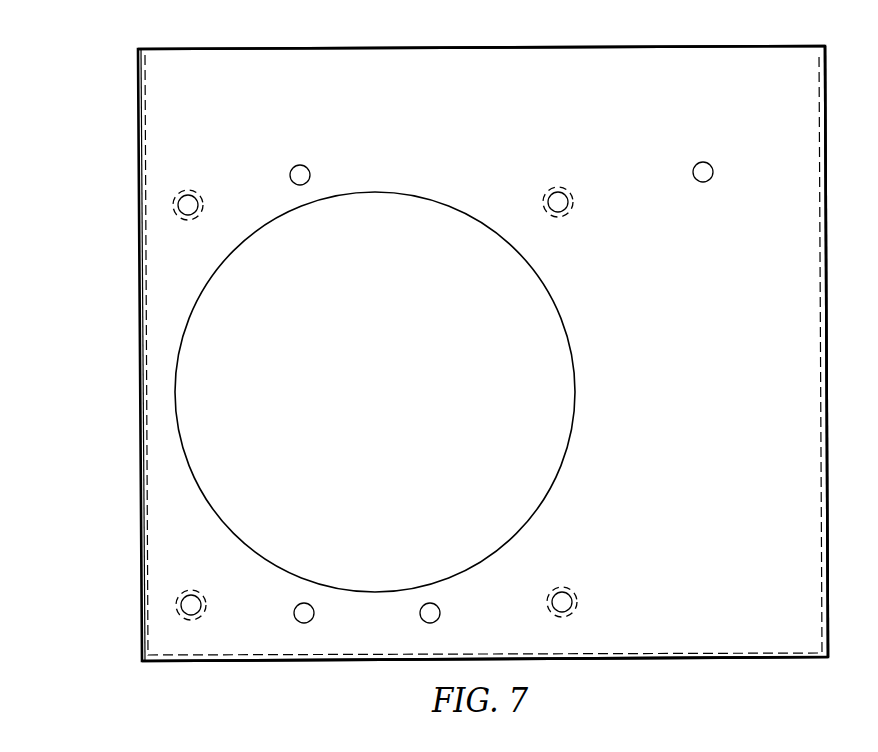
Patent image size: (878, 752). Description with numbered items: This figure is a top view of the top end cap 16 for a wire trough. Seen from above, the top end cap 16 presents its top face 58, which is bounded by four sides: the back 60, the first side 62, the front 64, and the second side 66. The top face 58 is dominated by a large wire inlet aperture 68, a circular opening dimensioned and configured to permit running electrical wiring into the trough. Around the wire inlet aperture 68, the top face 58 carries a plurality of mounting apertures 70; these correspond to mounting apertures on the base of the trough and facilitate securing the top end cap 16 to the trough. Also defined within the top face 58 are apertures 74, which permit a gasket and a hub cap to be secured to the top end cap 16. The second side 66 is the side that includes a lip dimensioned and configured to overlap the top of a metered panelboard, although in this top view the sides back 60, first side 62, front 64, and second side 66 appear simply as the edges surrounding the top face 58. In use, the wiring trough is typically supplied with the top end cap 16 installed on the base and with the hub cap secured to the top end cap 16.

The top end cap 16 is at (122, 455).
The top face 58 is at (805, 138).
The back 60 is at (140, 290).
The first side 62 is at (720, 659).
The front 64 is at (828, 302).
The second side 66 is at (752, 48).
The wire inlet aperture 68 is at (389, 394).
The mounting apertures 70 is at (296, 165).
The apertures 74 is at (190, 190).